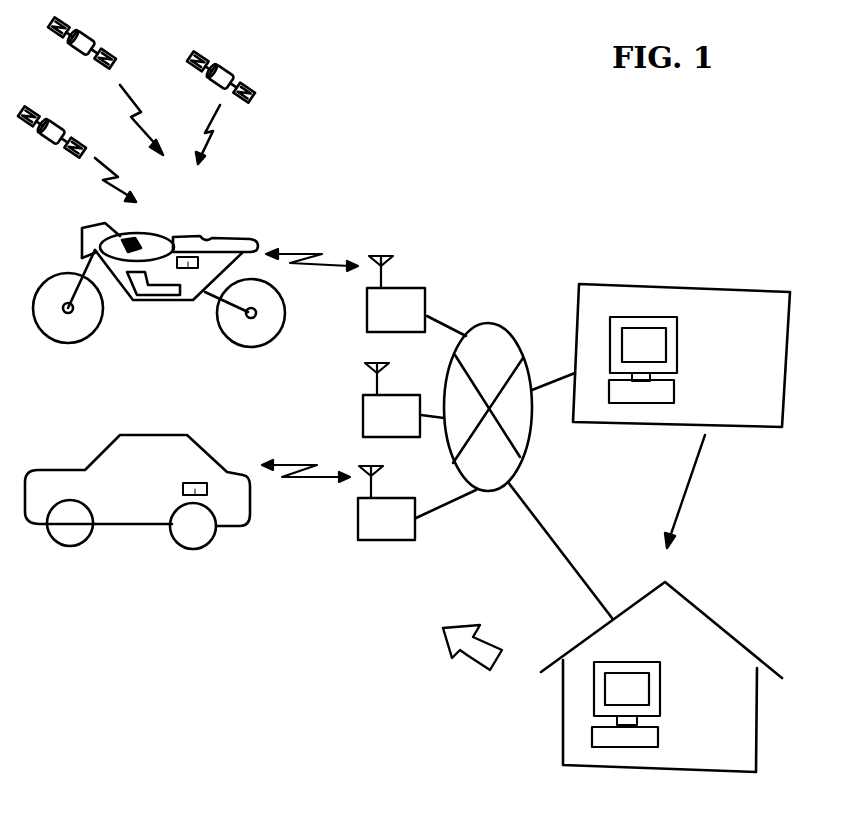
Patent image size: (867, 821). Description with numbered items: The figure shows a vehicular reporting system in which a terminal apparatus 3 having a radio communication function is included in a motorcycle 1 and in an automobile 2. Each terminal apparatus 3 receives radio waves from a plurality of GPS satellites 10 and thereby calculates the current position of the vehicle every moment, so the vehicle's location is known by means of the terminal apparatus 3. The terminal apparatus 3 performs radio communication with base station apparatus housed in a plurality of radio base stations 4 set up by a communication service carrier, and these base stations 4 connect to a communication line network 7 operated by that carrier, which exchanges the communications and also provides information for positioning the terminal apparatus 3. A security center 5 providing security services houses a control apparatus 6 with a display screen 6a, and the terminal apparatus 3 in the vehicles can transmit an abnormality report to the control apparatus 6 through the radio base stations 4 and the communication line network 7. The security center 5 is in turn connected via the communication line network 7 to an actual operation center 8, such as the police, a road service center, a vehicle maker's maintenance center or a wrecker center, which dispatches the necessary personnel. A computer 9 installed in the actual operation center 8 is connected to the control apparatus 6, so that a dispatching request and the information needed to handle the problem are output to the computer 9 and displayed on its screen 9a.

The motorcycle 1 is at (80, 270).
The automobile 2 is at (97, 455).
The terminal apparatus 3 is at (189, 257).
The radio base station 4 is at (408, 288).
The security center 5 is at (681, 332).
The control apparatus 6 is at (672, 392).
The display screen 6a is at (668, 340).
The communication line network 7 is at (497, 323).
The actual operation center 8 is at (661, 665).
The computer 9 is at (658, 736).
The screen 9a is at (652, 690).
The GPS satellite 10 is at (97, 37).